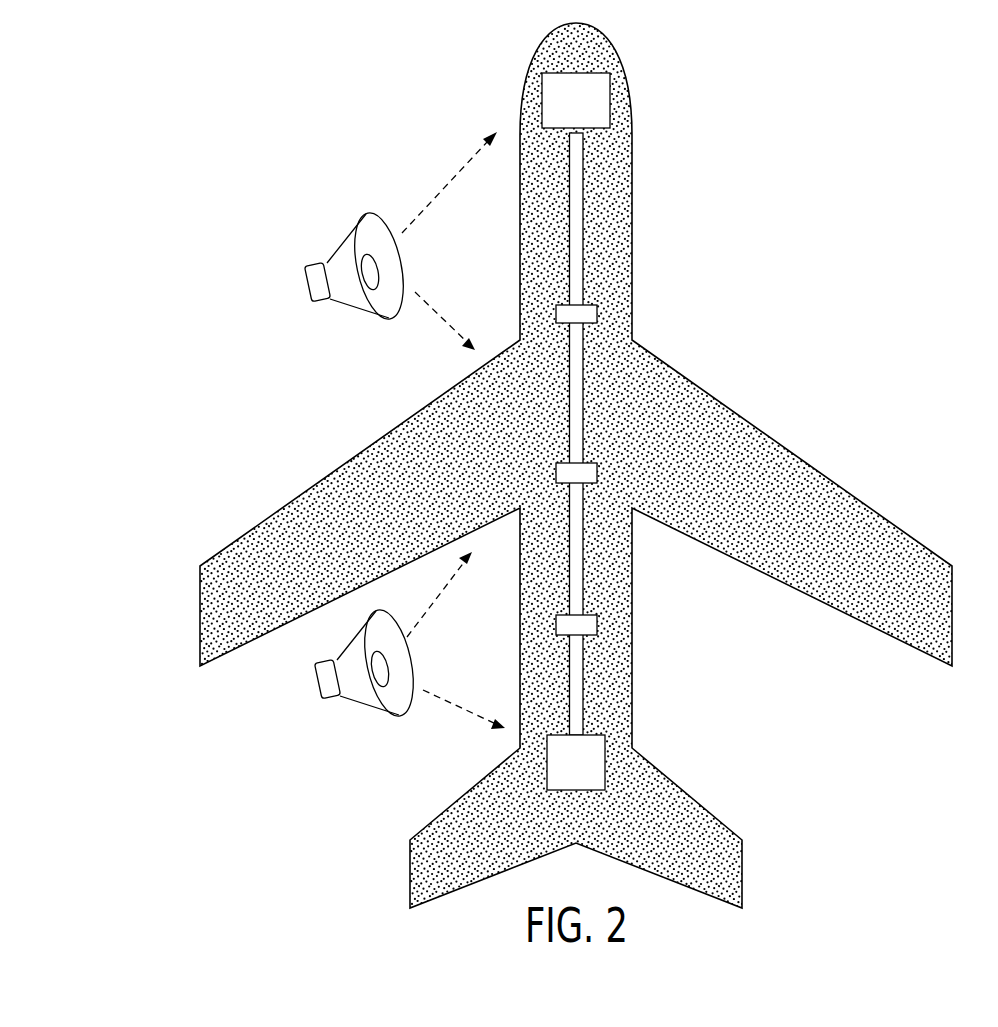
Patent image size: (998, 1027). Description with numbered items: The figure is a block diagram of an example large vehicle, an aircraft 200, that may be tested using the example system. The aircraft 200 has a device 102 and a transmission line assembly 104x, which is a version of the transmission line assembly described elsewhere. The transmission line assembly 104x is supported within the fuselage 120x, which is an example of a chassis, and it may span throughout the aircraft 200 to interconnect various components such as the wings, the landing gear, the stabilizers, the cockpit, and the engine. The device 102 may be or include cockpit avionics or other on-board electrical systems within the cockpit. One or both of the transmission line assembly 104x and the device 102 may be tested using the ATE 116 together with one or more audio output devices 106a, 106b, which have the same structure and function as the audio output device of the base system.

The aircraft 200 is at (130, 338).
The device 102 is at (610, 100).
The transmission line assembly 104x is at (583, 438).
The audio output device 106a is at (310, 282).
The audio output device 106b is at (320, 684).
The ATE 116 is at (605, 762).
The fuselage 120x is at (787, 449).